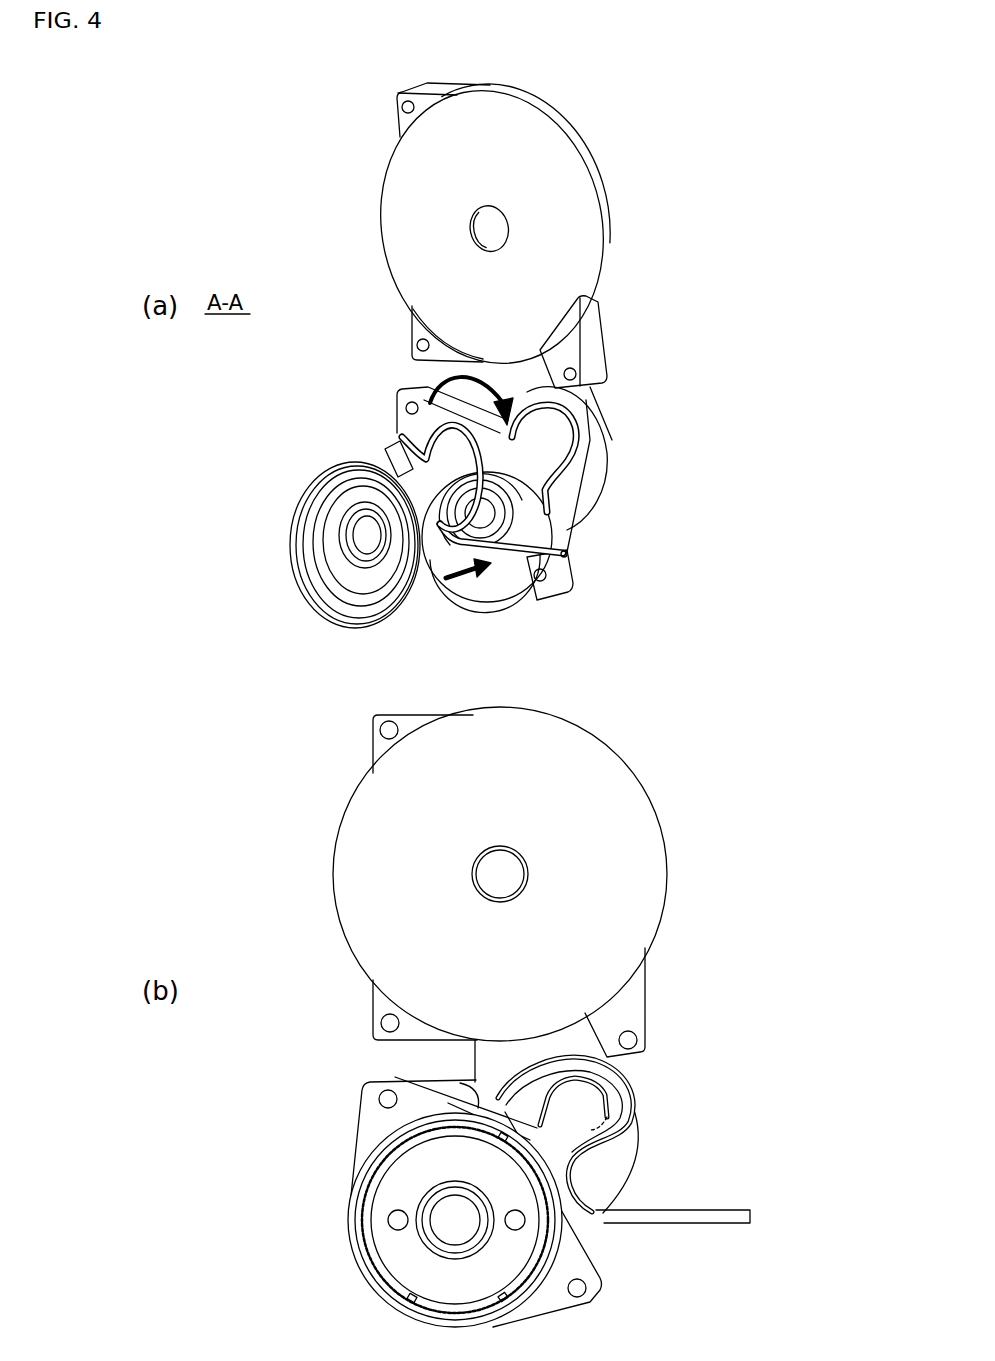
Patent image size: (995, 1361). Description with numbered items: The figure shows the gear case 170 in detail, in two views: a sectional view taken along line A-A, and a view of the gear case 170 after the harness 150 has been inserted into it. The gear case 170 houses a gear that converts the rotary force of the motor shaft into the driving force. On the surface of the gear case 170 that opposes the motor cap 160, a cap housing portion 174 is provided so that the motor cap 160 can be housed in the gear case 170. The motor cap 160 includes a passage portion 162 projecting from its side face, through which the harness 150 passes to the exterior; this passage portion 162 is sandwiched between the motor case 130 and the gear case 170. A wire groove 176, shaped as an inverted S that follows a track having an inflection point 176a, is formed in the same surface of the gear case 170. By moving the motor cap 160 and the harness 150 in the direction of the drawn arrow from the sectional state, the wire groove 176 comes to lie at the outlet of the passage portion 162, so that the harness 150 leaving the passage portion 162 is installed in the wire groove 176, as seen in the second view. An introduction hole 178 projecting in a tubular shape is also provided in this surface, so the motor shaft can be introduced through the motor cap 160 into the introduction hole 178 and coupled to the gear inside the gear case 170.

The motor case 130 is at (400, 1247).
The harness 150 is at (533, 593).
The motor cap 160 is at (420, 600).
The passage portion 162 is at (387, 452).
The gear case 170 is at (608, 183).
The cap housing portion 174 is at (490, 567).
The wire groove 176 is at (580, 425).
The inflection point 176a is at (593, 1093).
The introduction hole 178 is at (475, 515).